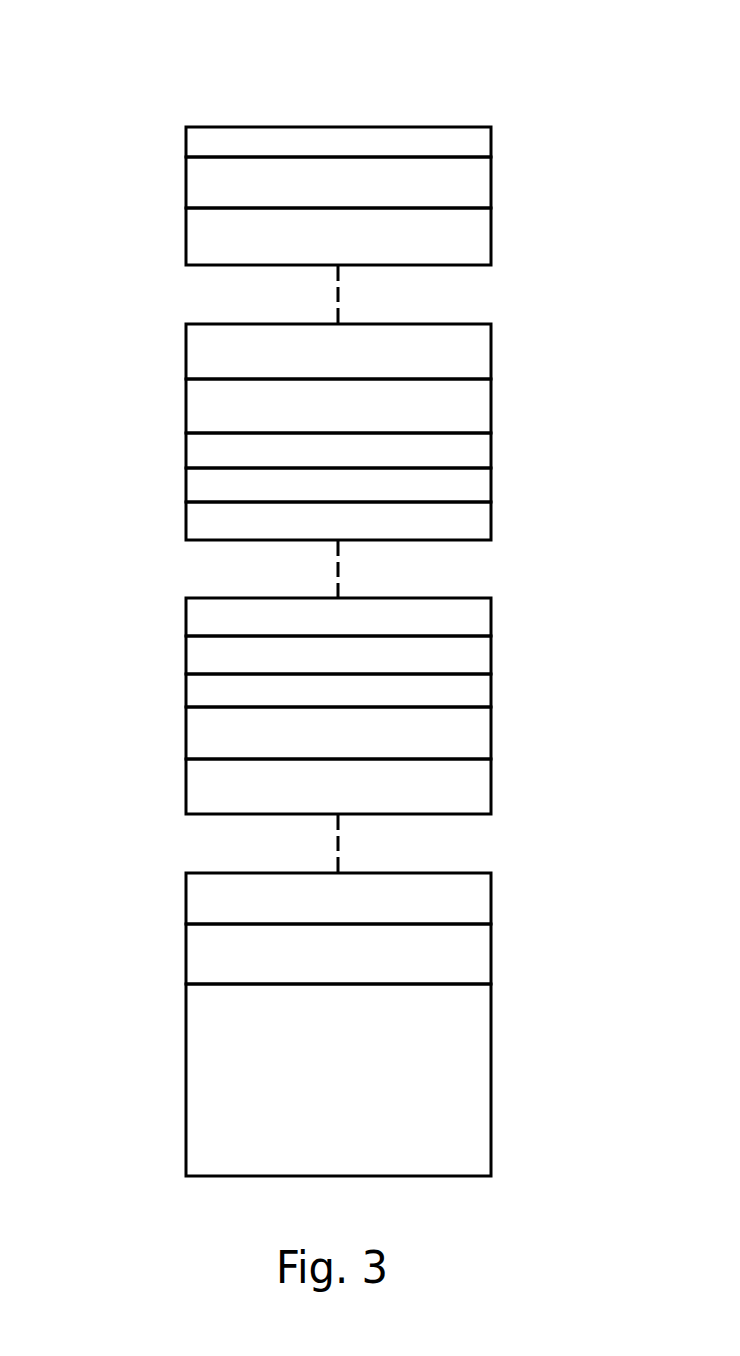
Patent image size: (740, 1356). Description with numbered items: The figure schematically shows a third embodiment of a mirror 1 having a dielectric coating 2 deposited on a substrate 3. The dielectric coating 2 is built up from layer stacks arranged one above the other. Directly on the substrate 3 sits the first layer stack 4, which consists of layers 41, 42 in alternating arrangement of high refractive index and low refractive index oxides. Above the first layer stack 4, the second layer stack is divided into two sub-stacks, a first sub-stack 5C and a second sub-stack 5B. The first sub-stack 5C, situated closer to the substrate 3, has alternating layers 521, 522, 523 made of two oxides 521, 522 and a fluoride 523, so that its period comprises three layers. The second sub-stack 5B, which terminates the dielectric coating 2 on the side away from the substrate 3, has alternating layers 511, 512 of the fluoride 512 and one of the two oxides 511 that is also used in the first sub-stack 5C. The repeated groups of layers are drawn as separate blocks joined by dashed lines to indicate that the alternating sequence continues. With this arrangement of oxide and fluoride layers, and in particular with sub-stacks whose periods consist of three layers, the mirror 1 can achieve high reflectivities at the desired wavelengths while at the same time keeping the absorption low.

The mirror 1 is at (463, 97).
The dielectric coating 2 is at (494, 127).
The substrate 3 is at (326, 1079).
The first layer stack 4 is at (492, 707).
The layer of high refractive index oxide 41 is at (185, 787).
The layer of low refractive index oxide 42 is at (185, 735).
The second sub-stack 5B is at (492, 127).
The first sub-stack 5C is at (492, 432).
The second oxide layer 511 is at (185, 143).
The fluoride layer 512 is at (185, 185).
The first oxide layer 521 is at (185, 520).
The second oxide layer 522 is at (185, 485).
The fluoride layer 523 is at (185, 450).